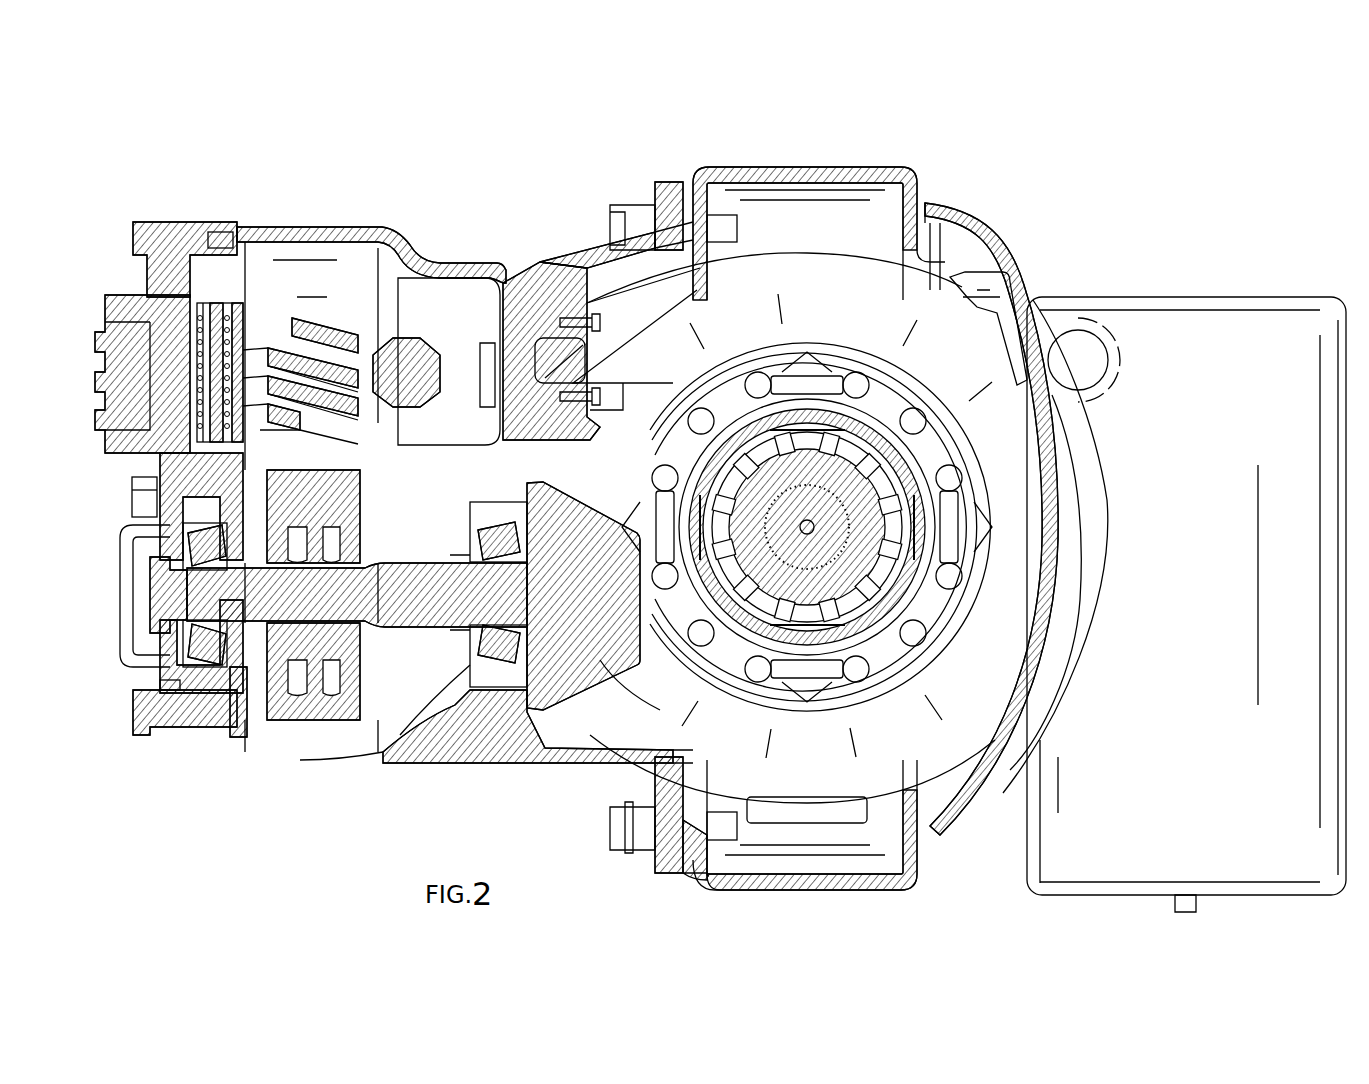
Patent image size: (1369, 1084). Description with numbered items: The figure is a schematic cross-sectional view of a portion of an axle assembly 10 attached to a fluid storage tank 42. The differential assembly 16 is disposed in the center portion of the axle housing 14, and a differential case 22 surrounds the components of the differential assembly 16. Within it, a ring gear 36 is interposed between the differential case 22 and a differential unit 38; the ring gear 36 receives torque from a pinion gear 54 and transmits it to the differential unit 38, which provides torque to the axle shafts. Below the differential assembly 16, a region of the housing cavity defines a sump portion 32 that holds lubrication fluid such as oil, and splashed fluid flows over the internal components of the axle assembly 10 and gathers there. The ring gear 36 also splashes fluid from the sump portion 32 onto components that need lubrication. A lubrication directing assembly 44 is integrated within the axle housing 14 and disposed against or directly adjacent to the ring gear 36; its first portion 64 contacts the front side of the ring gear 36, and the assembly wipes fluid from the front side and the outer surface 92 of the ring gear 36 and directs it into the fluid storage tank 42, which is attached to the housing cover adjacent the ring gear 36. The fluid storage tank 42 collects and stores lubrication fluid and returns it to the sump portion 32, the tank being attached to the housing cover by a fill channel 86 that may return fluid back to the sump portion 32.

The axle assembly 10 is at (260, 142).
The axle housing 14 is at (812, 165).
The differential assembly 16 is at (490, 718).
The differential case 22 is at (383, 752).
The sump portion 32 is at (233, 712).
The ring gear 36 is at (935, 300).
The differential unit 38 is at (183, 570).
The fluid storage tank 42 is at (1030, 886).
The lubrication directing assembly 44 is at (1003, 287).
The pinion gear 54 is at (428, 723).
The first portion 64 is at (893, 300).
The fill channel 86 is at (1077, 357).
The outer surface 92 is at (968, 300).